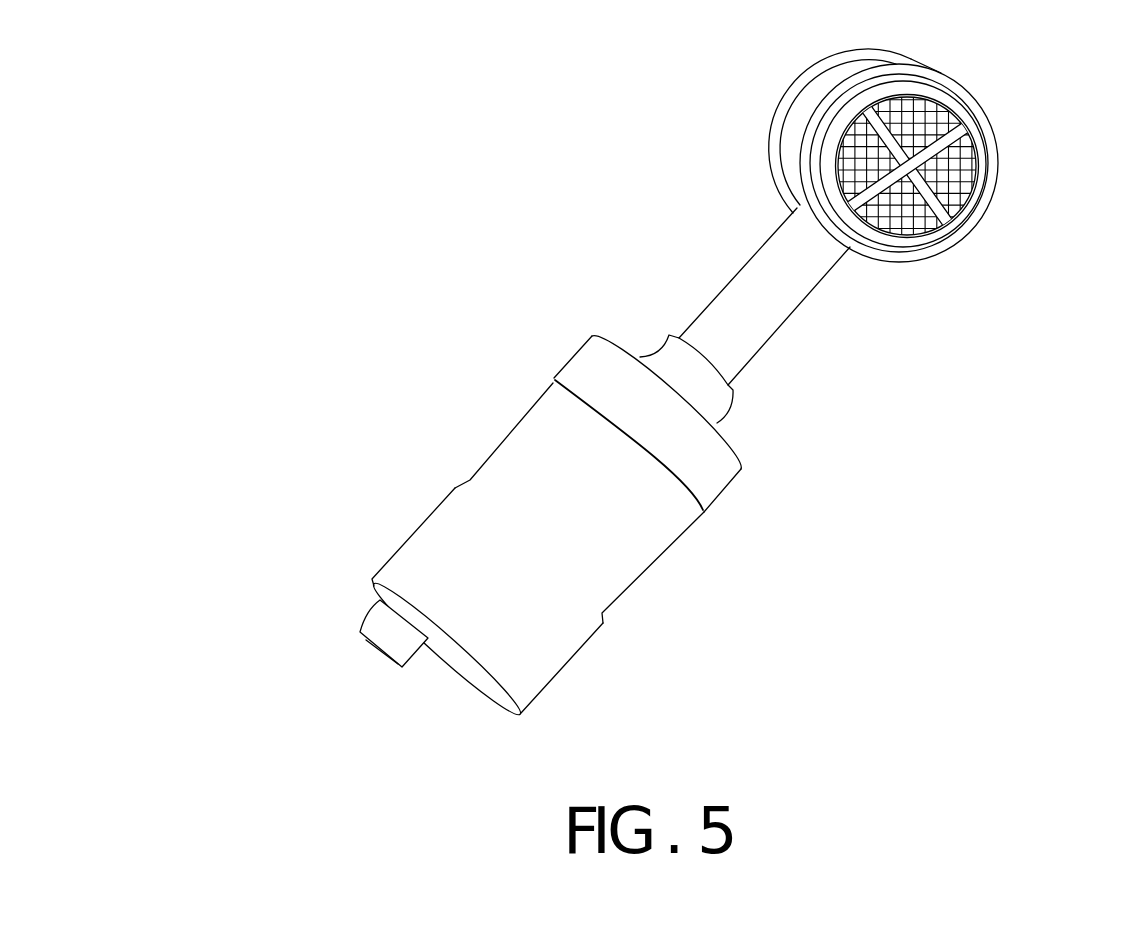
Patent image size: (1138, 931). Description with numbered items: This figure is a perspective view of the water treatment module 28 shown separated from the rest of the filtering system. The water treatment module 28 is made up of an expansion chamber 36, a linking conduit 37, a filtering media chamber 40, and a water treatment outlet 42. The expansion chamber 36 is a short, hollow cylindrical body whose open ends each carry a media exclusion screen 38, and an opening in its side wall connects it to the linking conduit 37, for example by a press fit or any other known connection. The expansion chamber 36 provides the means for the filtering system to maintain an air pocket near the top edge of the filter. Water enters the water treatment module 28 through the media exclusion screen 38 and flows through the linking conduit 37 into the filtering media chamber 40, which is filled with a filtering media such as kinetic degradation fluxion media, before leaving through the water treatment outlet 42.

The water treatment module 28 is at (965, 525).
The expansion chamber 36 is at (807, 107).
The linking conduit 37 is at (780, 300).
The media exclusion screen 38 is at (947, 113).
The filtering media chamber 40 is at (525, 452).
The water treatment outlet 42 is at (383, 628).